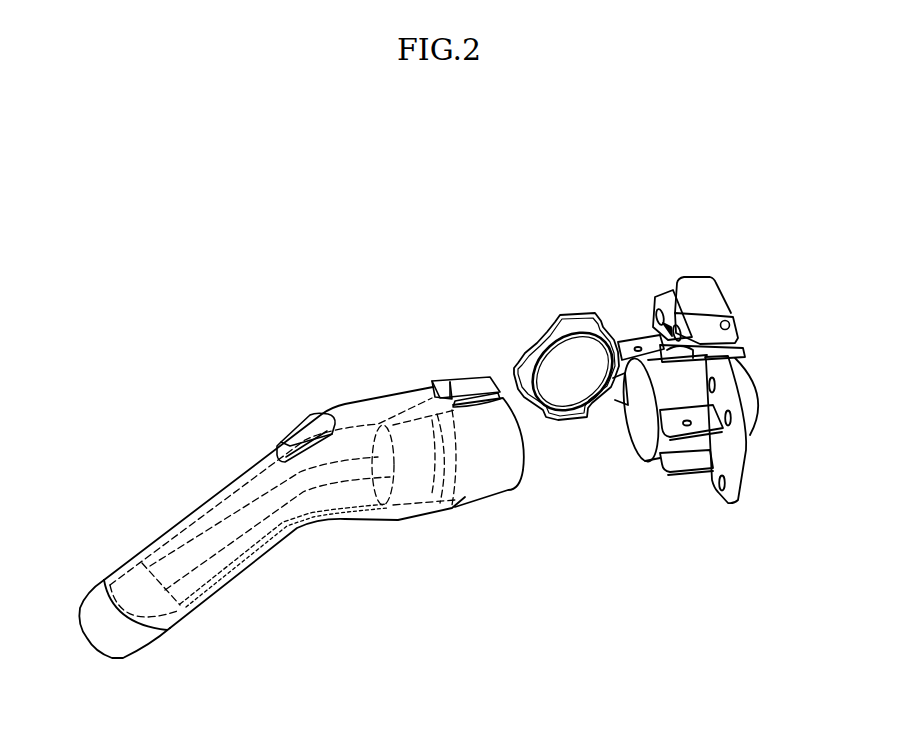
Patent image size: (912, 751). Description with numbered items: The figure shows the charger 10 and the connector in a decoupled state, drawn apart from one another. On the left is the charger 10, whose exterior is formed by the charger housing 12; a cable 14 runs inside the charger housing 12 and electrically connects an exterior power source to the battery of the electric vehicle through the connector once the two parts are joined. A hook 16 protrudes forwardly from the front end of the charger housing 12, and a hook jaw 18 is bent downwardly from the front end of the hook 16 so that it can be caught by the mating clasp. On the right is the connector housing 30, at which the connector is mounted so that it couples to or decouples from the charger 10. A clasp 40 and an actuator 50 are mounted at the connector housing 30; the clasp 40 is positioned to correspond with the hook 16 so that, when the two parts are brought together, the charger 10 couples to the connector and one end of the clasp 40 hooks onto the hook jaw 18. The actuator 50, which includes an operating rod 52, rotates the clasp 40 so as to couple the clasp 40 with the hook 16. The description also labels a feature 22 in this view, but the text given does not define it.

The charger 10 is at (410, 557).
The charger housing 12 is at (350, 510).
The cable 14 is at (284, 502).
The hook 16 is at (460, 380).
The hook jaw 18 is at (497, 392).
The grip button 22 is at (300, 430).
The connector housing 30 is at (727, 445).
The clasp 40 is at (652, 303).
The actuator 50 is at (697, 297).
The operating rod 52 is at (731, 322).